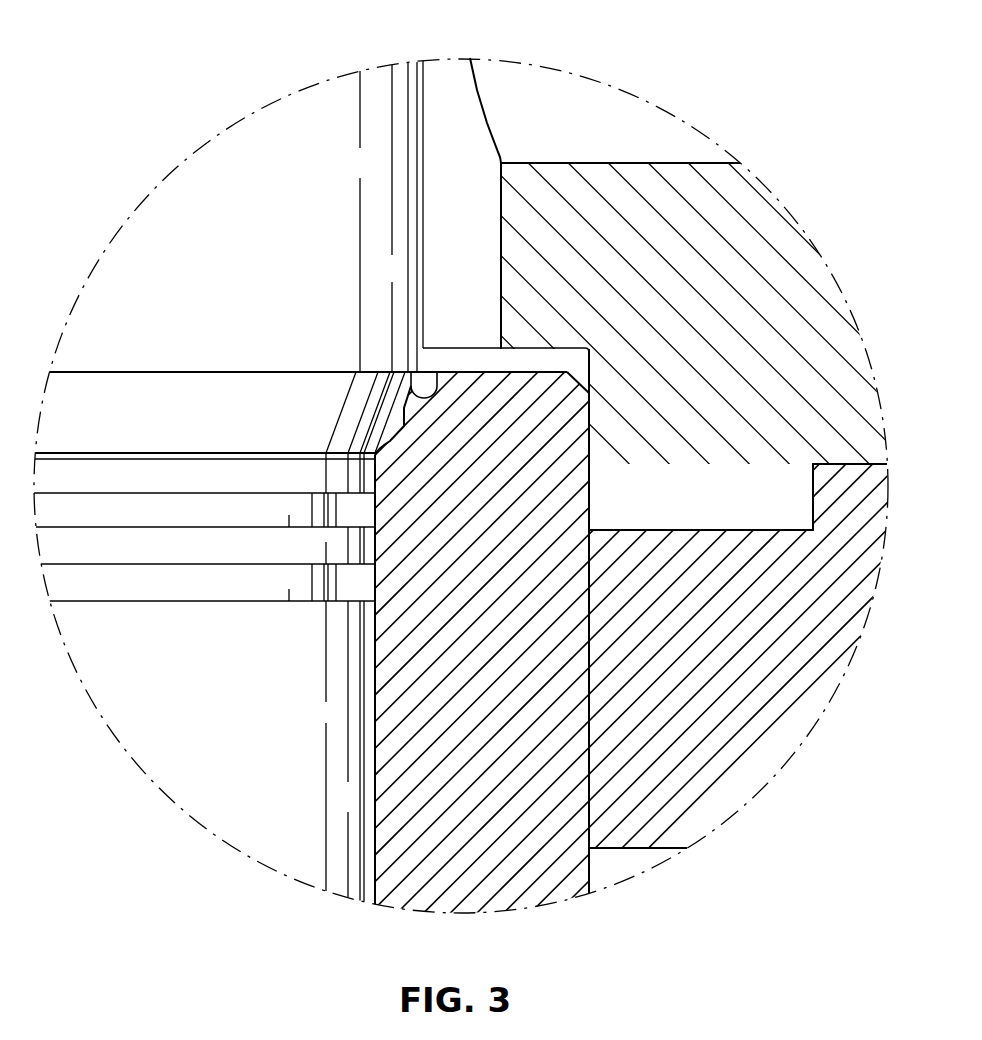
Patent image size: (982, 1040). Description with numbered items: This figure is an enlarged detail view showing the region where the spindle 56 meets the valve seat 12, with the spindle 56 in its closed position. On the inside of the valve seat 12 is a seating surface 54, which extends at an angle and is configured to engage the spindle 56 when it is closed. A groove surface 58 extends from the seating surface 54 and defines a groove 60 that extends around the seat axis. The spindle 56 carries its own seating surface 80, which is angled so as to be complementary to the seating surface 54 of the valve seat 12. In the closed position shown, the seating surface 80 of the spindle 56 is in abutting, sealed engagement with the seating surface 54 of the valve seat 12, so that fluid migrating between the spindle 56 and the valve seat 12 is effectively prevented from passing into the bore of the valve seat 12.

The valve seat 12 is at (745, 722).
The seating surface 54 is at (410, 388).
The spindle 56 is at (295, 135).
The groove surface 58 is at (396, 442).
The groove 60 is at (394, 444).
The seating surface 80 is at (437, 372).